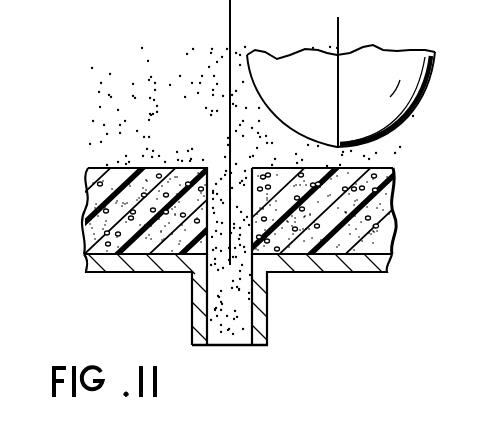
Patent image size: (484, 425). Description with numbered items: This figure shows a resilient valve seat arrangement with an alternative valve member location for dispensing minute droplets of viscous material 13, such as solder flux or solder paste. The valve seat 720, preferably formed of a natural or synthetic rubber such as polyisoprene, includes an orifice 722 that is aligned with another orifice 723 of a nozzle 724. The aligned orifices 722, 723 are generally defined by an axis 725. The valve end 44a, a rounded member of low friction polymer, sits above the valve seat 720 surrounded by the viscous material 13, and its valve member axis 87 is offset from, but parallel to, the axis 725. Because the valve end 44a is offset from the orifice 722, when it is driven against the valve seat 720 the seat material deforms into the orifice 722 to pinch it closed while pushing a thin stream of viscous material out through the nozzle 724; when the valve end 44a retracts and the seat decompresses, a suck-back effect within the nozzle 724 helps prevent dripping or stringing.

The viscous material 13 is at (163, 65).
The axis 725 is at (231, 18).
The valve member axis 87 is at (338, 32).
The rounded valve end member 44a is at (317, 99).
The orifice 722 is at (207, 172).
The valve seat 720 is at (390, 192).
The nozzle 724 is at (267, 290).
The orifice 723 is at (233, 329).